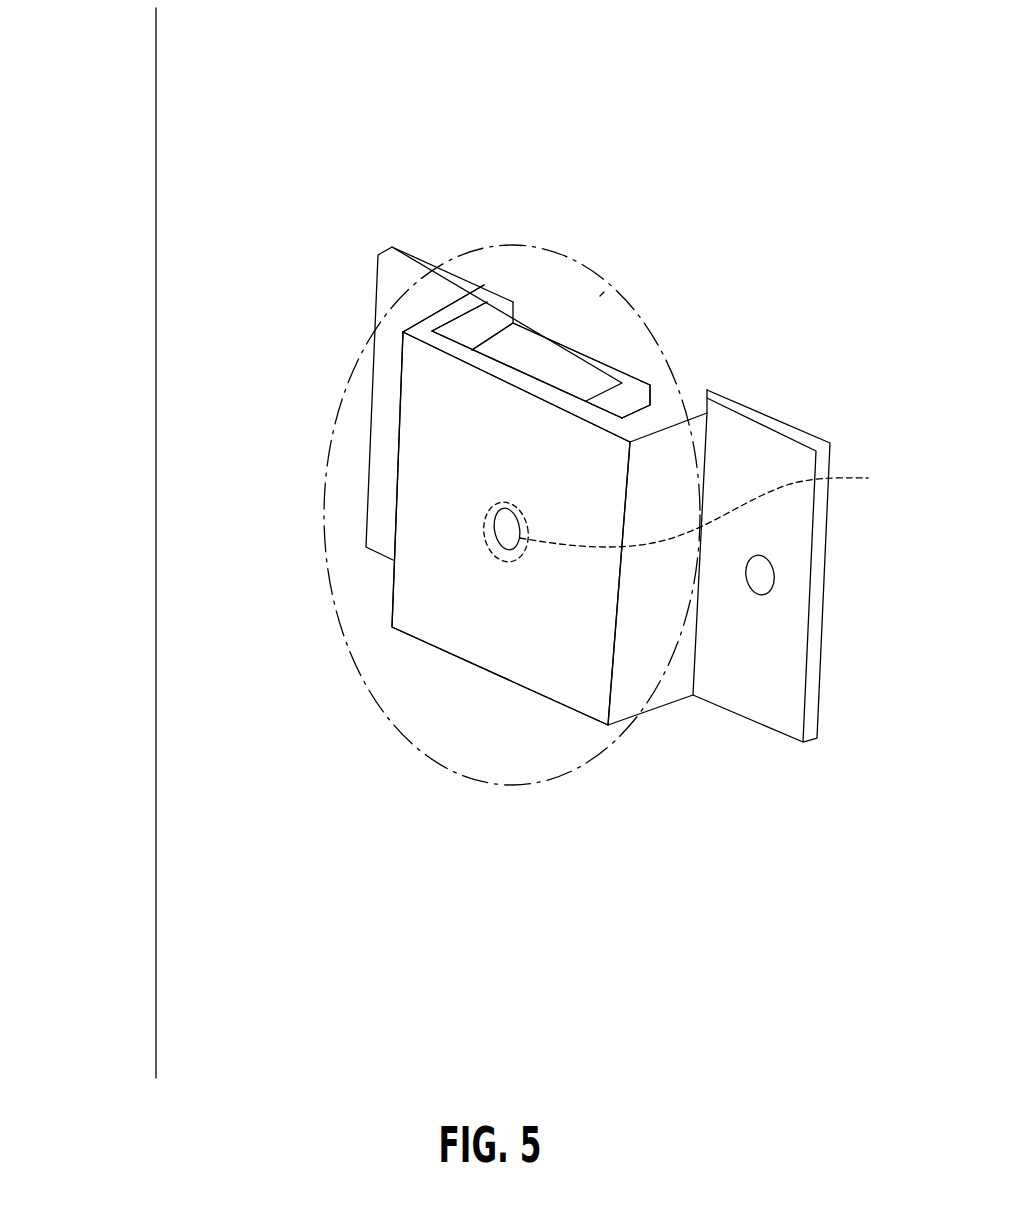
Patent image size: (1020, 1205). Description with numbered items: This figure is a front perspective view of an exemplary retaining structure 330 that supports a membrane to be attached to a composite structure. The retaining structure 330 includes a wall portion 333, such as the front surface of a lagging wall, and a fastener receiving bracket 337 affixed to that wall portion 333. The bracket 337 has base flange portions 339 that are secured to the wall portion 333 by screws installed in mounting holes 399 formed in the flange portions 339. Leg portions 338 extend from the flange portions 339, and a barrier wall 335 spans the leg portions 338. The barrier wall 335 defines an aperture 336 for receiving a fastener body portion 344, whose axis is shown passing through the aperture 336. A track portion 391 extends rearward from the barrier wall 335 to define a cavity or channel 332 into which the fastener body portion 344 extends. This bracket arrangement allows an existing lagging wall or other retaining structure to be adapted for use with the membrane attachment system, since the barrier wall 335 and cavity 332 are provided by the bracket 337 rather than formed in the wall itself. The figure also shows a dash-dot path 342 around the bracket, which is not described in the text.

The retaining structure 330 is at (118, 352).
The cavity or channel 332 is at (604, 292).
The wall portion 333 is at (243, 73).
The barrier wall 335 is at (580, 468).
The aperture 336 is at (493, 525).
The fastener receiving bracket 337 is at (468, 666).
The leg portions 338 is at (458, 317).
The base flange portions 339 is at (388, 286).
The rotation path 342 is at (336, 578).
The fastener body portion 344 is at (713, 503).
The track portion 391 is at (563, 368).
The mounting holes 399 is at (750, 582).